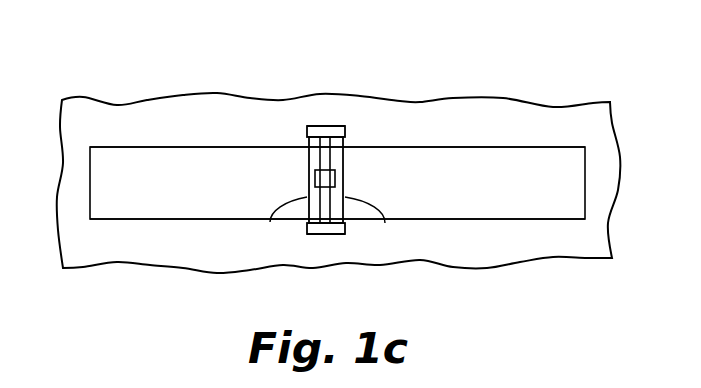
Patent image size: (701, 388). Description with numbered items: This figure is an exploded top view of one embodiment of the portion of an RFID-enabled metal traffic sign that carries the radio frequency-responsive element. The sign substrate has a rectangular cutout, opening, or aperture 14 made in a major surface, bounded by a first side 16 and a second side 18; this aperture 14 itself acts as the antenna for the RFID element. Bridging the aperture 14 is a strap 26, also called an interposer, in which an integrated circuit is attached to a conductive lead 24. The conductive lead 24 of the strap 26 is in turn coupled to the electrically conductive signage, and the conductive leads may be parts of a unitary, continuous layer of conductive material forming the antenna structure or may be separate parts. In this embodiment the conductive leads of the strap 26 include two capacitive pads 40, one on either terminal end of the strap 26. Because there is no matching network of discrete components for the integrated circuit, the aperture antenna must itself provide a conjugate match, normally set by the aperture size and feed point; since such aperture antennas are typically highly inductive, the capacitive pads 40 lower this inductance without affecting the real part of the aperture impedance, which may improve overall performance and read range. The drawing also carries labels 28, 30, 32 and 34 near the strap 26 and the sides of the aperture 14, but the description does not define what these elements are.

The aperture 14 is at (479, 200).
The first side 16 is at (497, 147).
The second side 18 is at (512, 218).
The conductive lead 24 is at (328, 152).
The strap 26 is at (336, 184).
The left electric field region 28 is at (279, 226).
The right electric field region 30 is at (376, 226).
The top contact pad 32 is at (315, 126).
The bottom contact pad 34 is at (317, 235).
The capacitive pads 40 is at (308, 130).